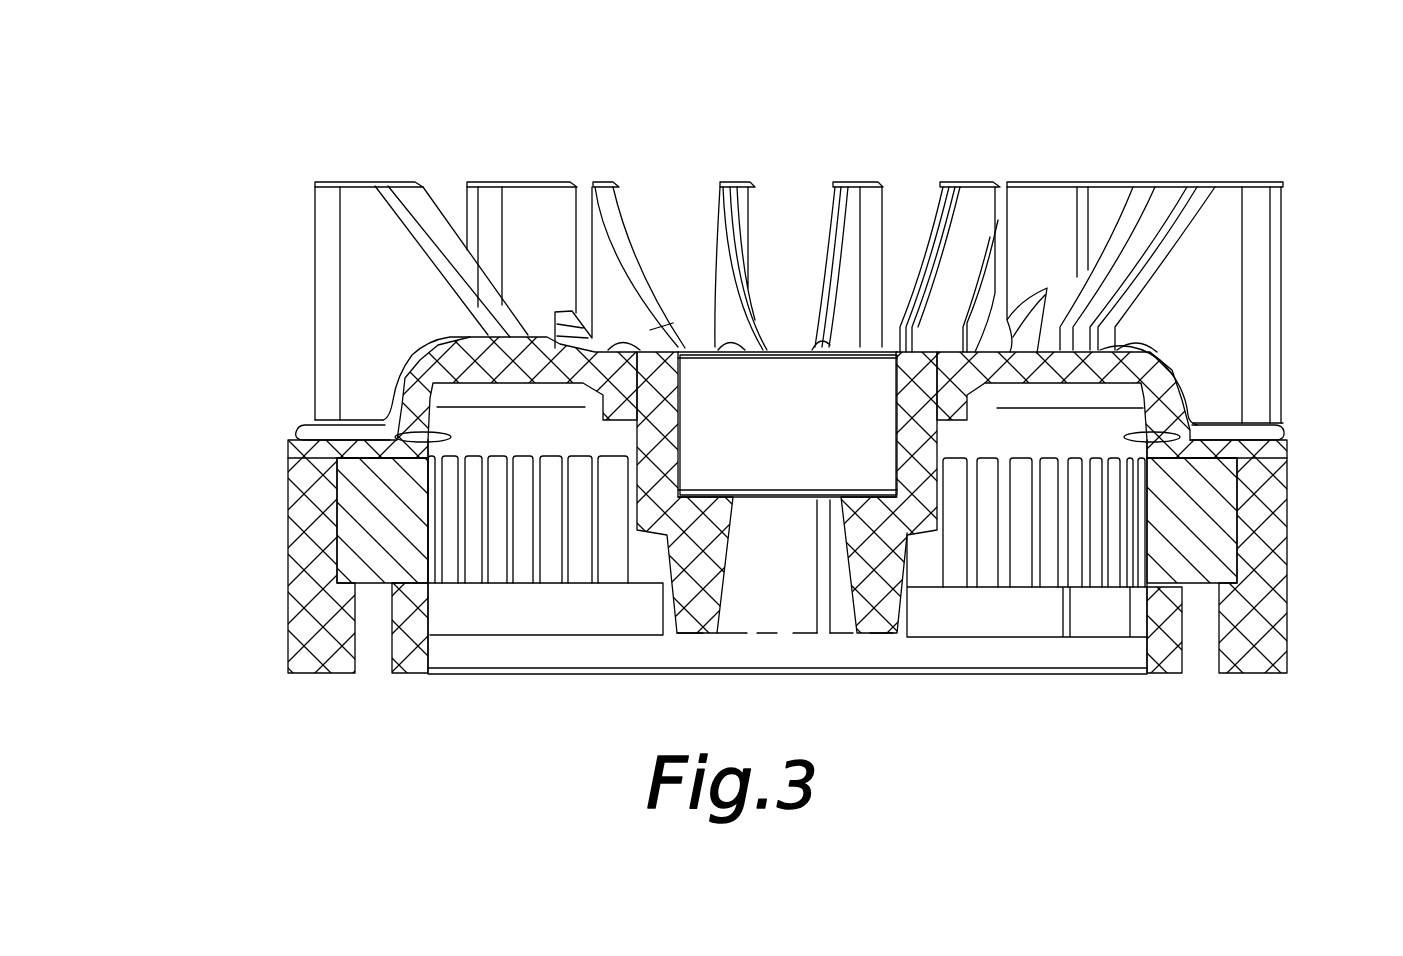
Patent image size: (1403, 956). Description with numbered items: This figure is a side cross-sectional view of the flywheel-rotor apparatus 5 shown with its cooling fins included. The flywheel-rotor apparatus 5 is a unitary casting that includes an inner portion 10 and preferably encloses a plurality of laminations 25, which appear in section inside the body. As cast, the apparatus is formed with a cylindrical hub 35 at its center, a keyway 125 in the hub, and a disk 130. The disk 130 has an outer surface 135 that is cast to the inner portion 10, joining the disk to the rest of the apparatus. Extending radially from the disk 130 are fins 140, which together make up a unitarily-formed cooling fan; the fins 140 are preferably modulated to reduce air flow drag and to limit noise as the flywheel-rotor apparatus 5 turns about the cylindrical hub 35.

The flywheel-rotor apparatus 5 is at (1296, 138).
The inner portion 10 is at (300, 458).
The laminations 25 is at (371, 660).
The cylindrical hub 35 is at (748, 613).
The keyway 125 is at (805, 614).
The disk 130 is at (425, 373).
The outer surface 135 is at (313, 418).
The fins 140 is at (548, 198).